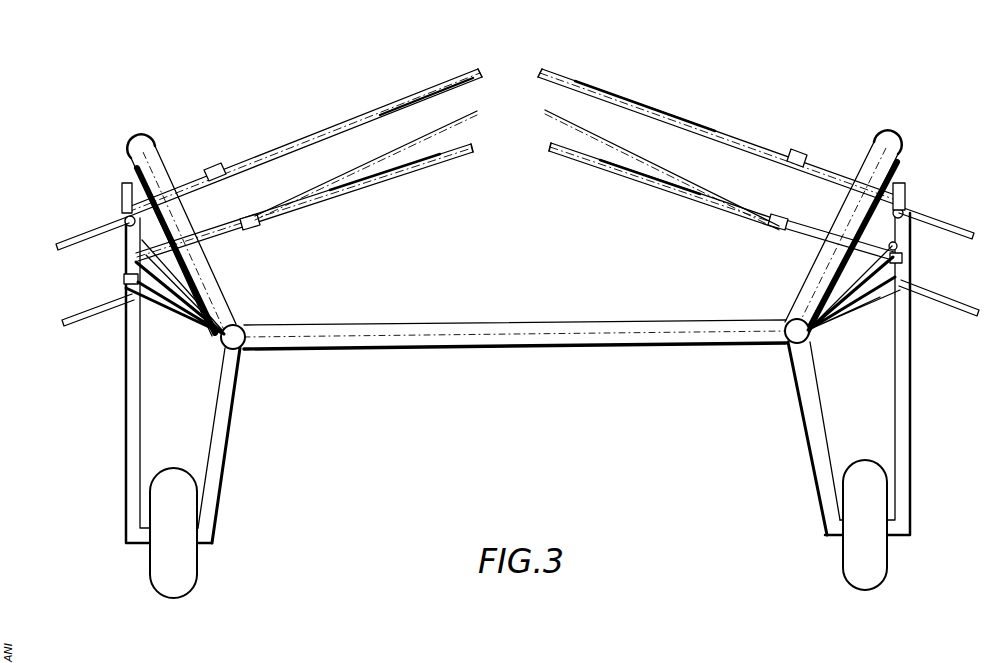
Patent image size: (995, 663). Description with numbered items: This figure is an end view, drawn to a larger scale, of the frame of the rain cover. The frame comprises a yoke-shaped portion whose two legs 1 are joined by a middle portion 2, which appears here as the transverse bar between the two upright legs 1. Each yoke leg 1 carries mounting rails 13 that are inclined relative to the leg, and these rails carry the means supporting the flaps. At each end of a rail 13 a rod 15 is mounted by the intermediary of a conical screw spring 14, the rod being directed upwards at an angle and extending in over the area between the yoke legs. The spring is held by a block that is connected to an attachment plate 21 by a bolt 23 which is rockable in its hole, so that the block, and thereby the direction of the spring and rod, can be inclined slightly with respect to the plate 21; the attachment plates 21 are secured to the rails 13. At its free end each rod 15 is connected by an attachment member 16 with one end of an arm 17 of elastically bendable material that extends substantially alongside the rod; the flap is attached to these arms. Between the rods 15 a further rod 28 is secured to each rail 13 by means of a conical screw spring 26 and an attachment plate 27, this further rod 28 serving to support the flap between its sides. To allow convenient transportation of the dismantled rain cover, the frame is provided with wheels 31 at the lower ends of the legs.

The yoke leg 1 is at (232, 302).
The middle portion of yoke 2 is at (552, 324).
The mounting rail 13 is at (125, 224).
The conical screw spring 14 is at (202, 173).
The rod 15 is at (314, 136).
The attachment member 16 is at (461, 76).
The arm 17 is at (63, 252).
The attachment plate 21 is at (122, 187).
The bolt 23 is at (121, 201).
The conical screw spring 26 is at (797, 220).
The attachment plate 27 is at (153, 302).
The further rod 28 is at (314, 188).
The wheel 31 is at (185, 567).